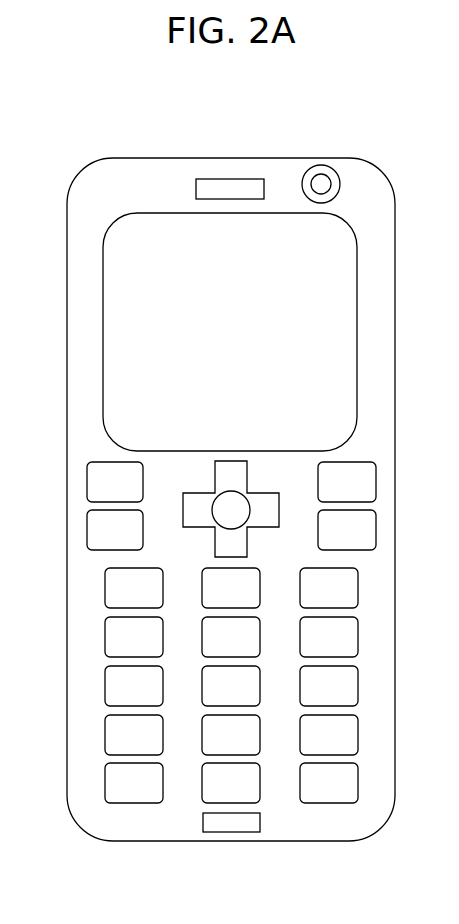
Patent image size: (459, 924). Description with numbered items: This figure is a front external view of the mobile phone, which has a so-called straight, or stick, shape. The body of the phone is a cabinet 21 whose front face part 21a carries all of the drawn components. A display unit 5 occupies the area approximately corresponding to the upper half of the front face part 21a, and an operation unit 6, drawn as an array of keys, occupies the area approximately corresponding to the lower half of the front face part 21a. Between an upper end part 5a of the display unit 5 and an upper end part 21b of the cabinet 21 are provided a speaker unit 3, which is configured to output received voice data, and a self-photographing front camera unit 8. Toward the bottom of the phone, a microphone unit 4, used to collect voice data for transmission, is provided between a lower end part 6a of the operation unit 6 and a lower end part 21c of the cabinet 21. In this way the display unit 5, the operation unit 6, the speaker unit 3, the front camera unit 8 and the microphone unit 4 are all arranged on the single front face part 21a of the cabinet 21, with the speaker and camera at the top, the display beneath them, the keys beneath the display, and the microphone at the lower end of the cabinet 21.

The cabinet 21 is at (306, 97).
The front face part 21a is at (380, 418).
The upper end part 21b is at (228, 158).
The lower end part 21c is at (229, 841).
The speaker unit 3 is at (203, 179).
The microphone unit 4 is at (260, 822).
The display unit 5 is at (103, 303).
The upper end part 5a is at (157, 213).
The operation unit 6 is at (88, 649).
The lower end part 6a is at (135, 803).
The front camera unit 8 is at (322, 165).